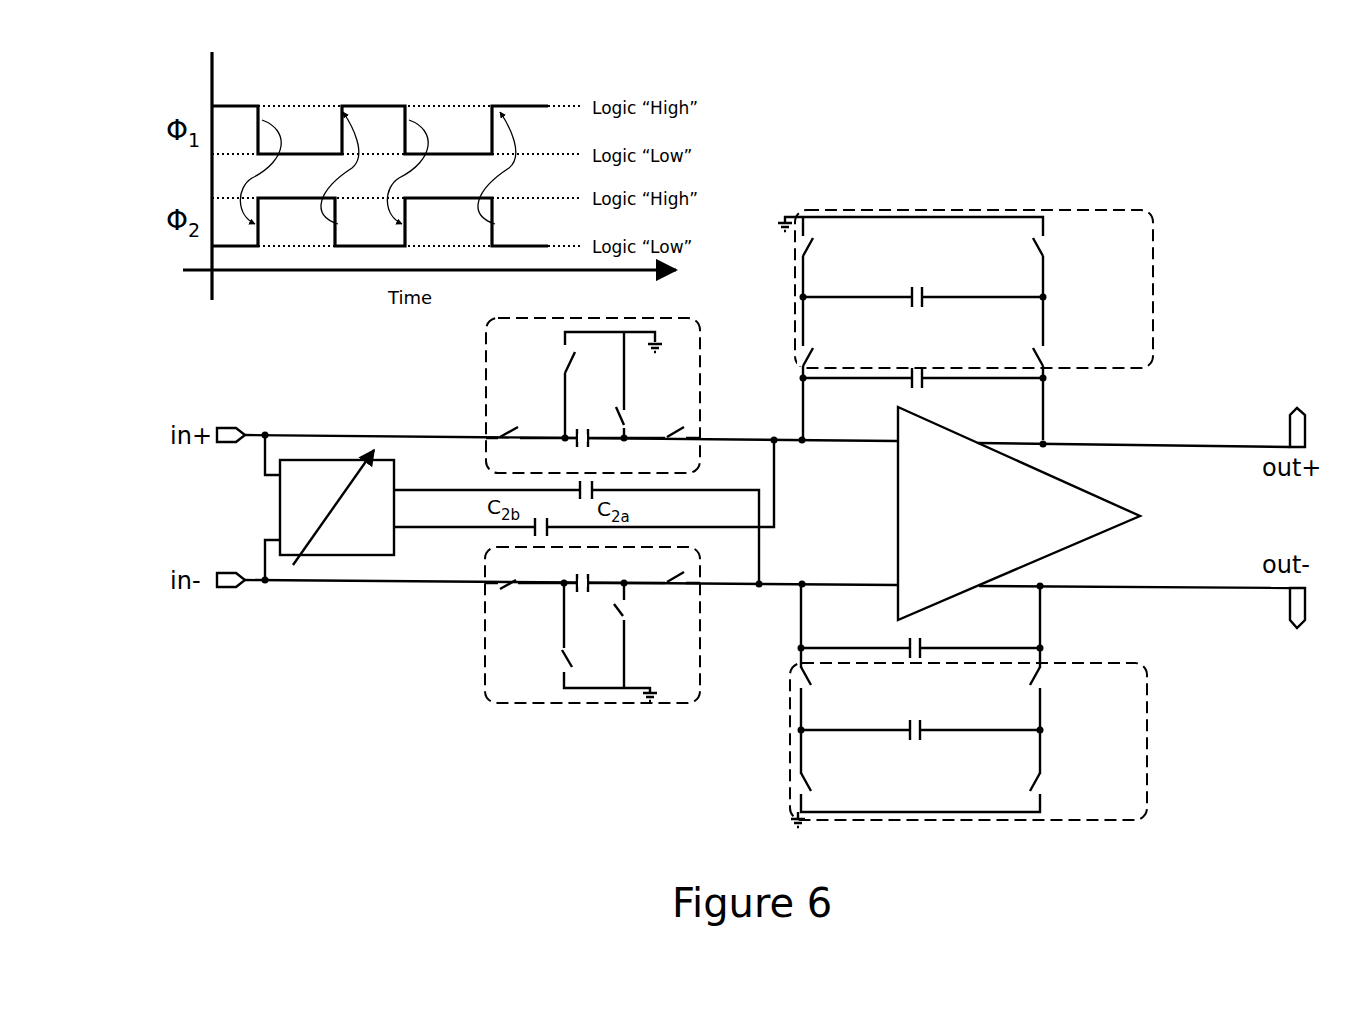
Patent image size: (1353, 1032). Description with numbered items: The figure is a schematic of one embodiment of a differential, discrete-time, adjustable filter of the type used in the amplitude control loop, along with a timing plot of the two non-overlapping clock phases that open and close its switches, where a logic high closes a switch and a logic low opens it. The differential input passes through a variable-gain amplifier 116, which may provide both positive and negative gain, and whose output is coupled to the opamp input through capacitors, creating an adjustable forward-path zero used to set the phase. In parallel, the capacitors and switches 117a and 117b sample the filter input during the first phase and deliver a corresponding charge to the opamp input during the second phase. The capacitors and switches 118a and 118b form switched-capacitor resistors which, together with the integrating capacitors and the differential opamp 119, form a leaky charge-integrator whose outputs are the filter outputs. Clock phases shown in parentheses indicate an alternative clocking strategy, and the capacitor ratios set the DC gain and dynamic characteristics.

The variable-gain amplifier 116 is at (350, 540).
The capacitors and switches 117a is at (492, 326).
The capacitors and switches 117b is at (490, 684).
The capacitors and switches 118a is at (1162, 284).
The capacitors and switches 118b is at (1152, 740).
The differential opamp 119 is at (1057, 487).